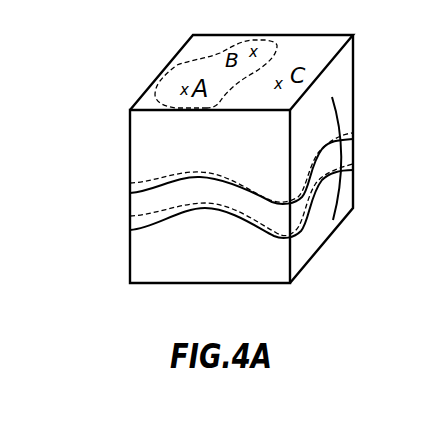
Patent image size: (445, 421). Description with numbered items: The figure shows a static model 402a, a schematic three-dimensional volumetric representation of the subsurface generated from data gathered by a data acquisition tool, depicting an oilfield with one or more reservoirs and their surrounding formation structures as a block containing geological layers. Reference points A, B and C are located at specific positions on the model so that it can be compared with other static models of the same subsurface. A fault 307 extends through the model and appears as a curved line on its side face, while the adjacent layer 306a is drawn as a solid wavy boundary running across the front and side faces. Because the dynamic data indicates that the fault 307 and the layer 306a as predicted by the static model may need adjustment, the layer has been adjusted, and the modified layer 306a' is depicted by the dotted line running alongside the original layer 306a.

The static model 402a is at (175, 57).
The modified layer 306a' is at (185, 170).
The layer 306a is at (185, 201).
The fault 307 is at (337, 109).